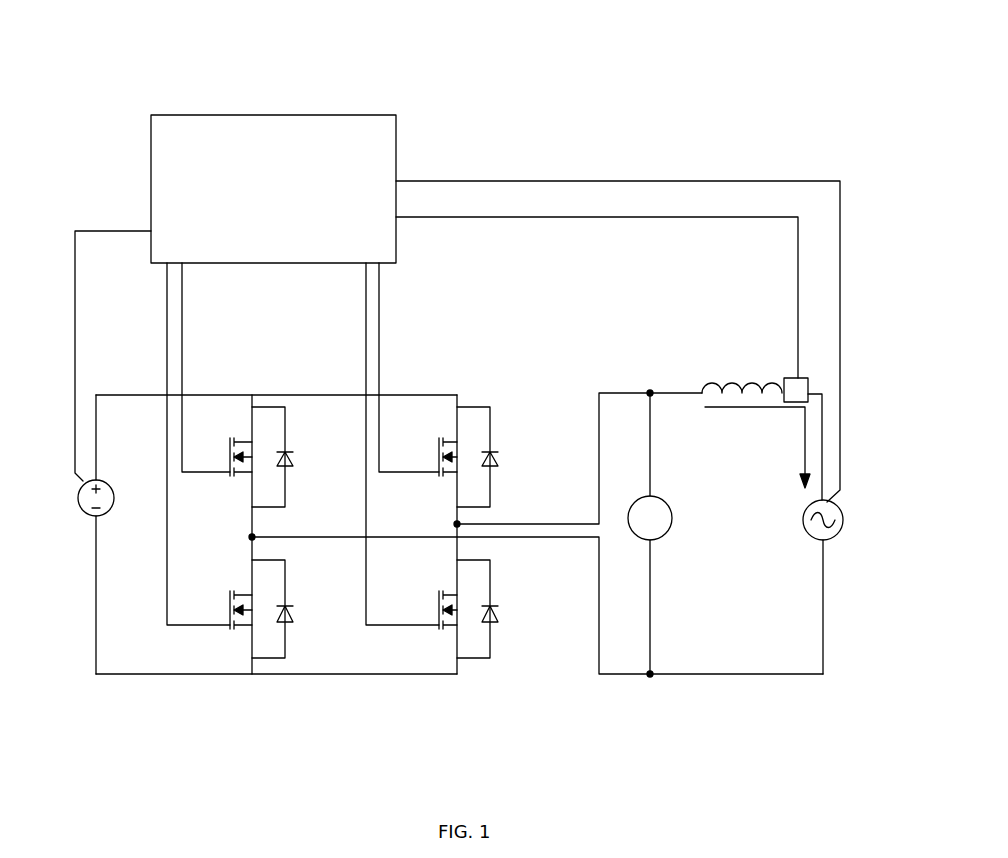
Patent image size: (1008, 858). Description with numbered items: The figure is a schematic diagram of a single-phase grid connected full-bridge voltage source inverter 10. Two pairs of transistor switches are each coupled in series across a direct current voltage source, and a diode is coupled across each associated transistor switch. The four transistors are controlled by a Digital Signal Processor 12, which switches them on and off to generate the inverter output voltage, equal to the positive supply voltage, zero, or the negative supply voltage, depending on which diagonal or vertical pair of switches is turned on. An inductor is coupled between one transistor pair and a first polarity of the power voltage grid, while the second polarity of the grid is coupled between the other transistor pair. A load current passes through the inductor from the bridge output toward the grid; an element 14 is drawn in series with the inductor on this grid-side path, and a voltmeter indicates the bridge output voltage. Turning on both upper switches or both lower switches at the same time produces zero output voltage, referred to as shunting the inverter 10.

The single-phase full-bridge inverter 10 is at (527, 66).
The Digital Signal Processor 12 is at (396, 157).
The current sensor 14 is at (784, 380).